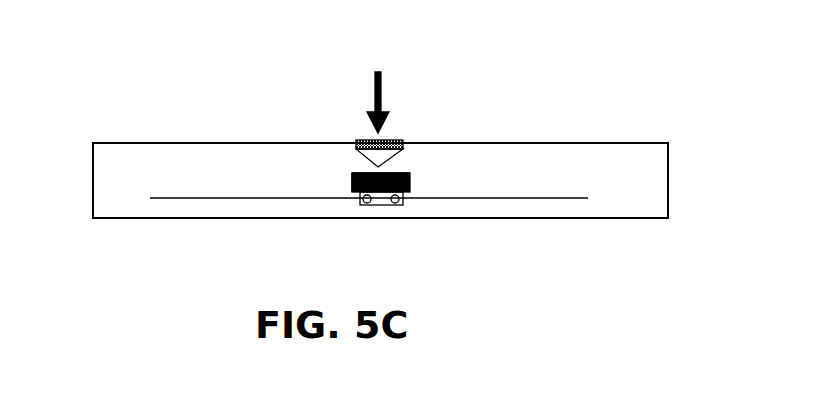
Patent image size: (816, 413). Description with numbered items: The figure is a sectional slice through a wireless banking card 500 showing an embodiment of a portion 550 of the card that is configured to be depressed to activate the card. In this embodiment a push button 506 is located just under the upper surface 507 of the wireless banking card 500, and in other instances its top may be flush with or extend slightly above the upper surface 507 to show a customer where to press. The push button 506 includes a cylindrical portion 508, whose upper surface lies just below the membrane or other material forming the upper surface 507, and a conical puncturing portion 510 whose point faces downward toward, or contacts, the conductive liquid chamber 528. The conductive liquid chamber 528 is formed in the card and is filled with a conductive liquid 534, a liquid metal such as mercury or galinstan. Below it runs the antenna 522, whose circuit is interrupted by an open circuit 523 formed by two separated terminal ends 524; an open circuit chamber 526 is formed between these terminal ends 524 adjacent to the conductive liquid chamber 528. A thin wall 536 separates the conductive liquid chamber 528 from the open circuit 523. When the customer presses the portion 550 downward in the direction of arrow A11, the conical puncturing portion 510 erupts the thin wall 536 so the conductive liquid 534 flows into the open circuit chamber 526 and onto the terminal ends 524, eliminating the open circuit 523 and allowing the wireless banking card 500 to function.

The wireless banking card 500 is at (217, 143).
The upper surface 507 is at (175, 143).
The push button 506 is at (420, 128).
The antenna 522 is at (200, 198).
The arrow A11 is at (381, 93).
The portion 550 is at (348, 125).
The cylindrical portion 508 is at (356, 145).
The conical puncturing portion 510 is at (393, 164).
The conductive liquid chamber 528 is at (418, 188).
The conductive liquid 534 is at (410, 175).
The thin wall 536 is at (350, 188).
The open circuit chamber 526 is at (363, 207).
The terminal ends 524 is at (366, 204).
The open circuit 523 is at (378, 208).